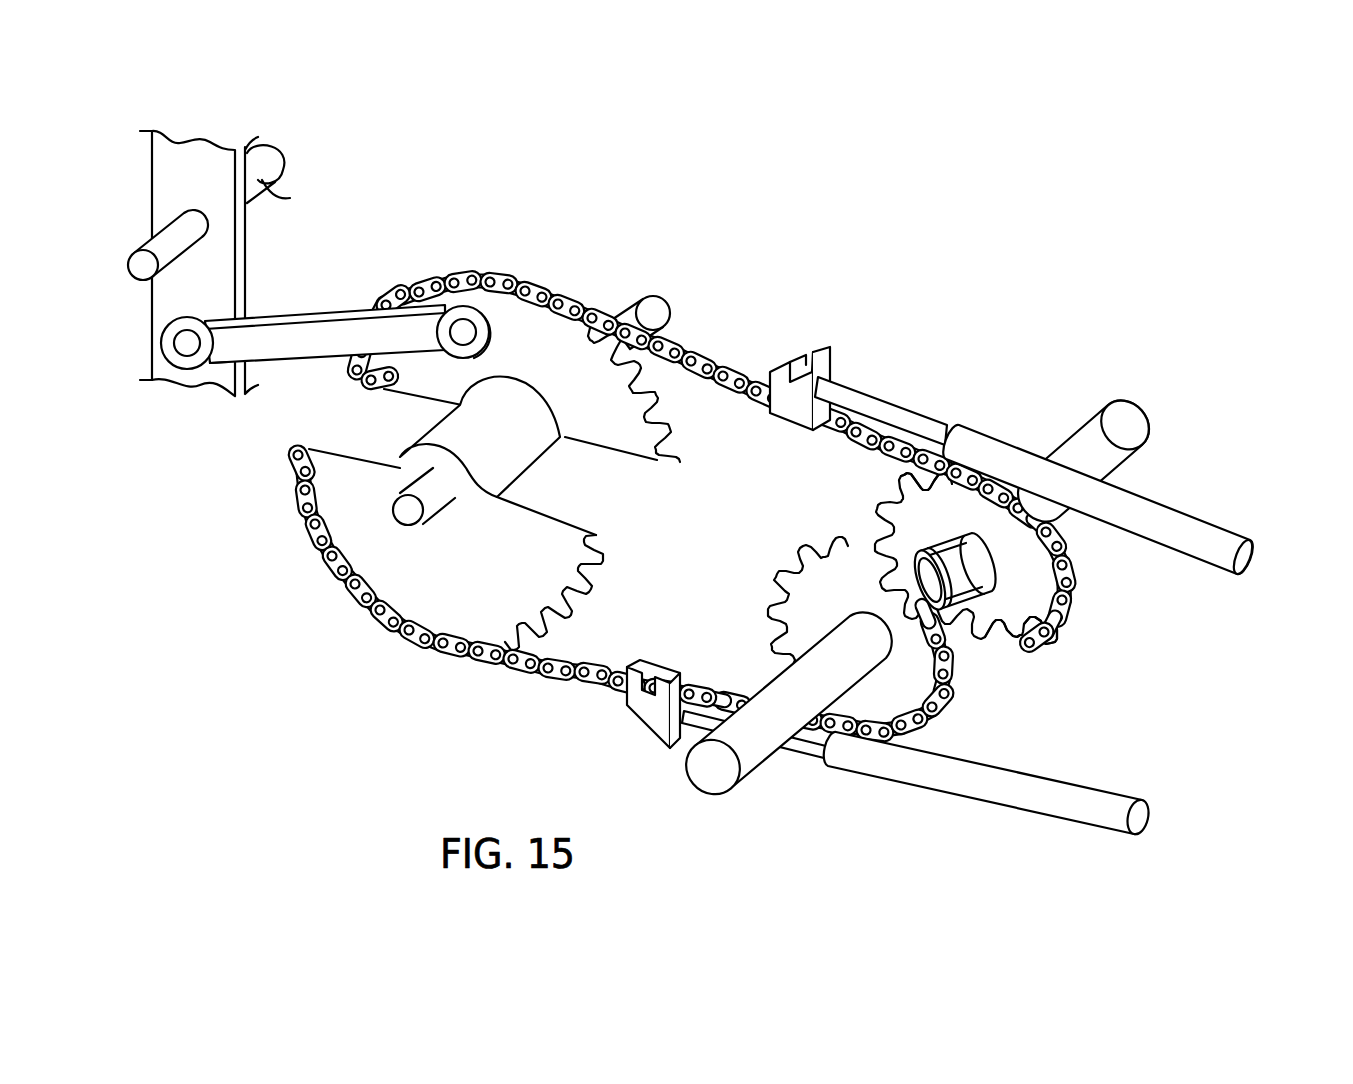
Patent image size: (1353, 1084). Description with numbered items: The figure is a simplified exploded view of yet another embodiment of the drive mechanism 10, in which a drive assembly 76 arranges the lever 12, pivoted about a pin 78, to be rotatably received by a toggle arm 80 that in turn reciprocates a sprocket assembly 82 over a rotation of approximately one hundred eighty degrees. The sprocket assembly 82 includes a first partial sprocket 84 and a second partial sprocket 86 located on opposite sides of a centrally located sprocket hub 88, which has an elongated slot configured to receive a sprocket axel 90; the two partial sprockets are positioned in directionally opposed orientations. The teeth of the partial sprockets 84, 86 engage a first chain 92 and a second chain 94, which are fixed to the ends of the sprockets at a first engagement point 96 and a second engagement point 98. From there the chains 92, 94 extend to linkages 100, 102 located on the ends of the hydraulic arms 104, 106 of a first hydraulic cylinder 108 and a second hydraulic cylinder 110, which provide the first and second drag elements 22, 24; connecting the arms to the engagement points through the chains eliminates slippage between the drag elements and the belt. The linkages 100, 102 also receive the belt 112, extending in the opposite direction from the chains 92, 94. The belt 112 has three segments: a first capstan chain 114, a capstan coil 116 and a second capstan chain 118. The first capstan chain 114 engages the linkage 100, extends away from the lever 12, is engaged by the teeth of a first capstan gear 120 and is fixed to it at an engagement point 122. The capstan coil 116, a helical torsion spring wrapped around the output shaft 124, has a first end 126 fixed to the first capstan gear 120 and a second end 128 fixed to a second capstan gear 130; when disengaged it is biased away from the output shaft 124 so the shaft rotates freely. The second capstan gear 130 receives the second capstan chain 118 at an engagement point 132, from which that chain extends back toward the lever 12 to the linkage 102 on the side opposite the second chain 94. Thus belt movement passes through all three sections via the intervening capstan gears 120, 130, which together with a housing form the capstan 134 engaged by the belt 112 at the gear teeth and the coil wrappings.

The drive mechanism 10 is at (293, 645).
The lever 12 is at (166, 172).
The first drag element 22 is at (1124, 483).
The second drag element 24 is at (988, 801).
The drive assembly 76 is at (855, 363).
The pin 78 is at (290, 198).
The toggle arm 80 is at (303, 330).
The sprocket assembly 82 is at (300, 415).
The first partial sprocket 84 is at (633, 440).
The second partial sprocket 86 is at (560, 570).
The sprocket hub 88 is at (517, 453).
The sprocket axel 90 is at (643, 308).
The first chain 92 is at (467, 277).
The second chain 94 is at (390, 627).
The first engagement point 96 is at (383, 385).
The second engagement point 98 is at (320, 473).
The linkage 100 is at (818, 347).
The linkage 102 is at (640, 715).
The hydraulic arm 104 is at (878, 400).
The hydraulic arm 106 is at (800, 753).
The first hydraulic cylinder 108 is at (1173, 517).
The second hydraulic cylinder 110 is at (970, 787).
The belt 112 is at (1090, 583).
The first capstan chain 114 is at (1060, 627).
The capstan coil 116 is at (1008, 636).
The second capstan chain 118 is at (723, 683).
The first capstan gear 120 is at (900, 486).
The engagement point 122 is at (1048, 642).
The output shaft 124 is at (710, 768).
The first end 126 is at (900, 503).
The second end 128 is at (867, 593).
The second capstan gear 130 is at (902, 675).
The engagement point 132 is at (927, 613).
The capstan 134 is at (894, 576).